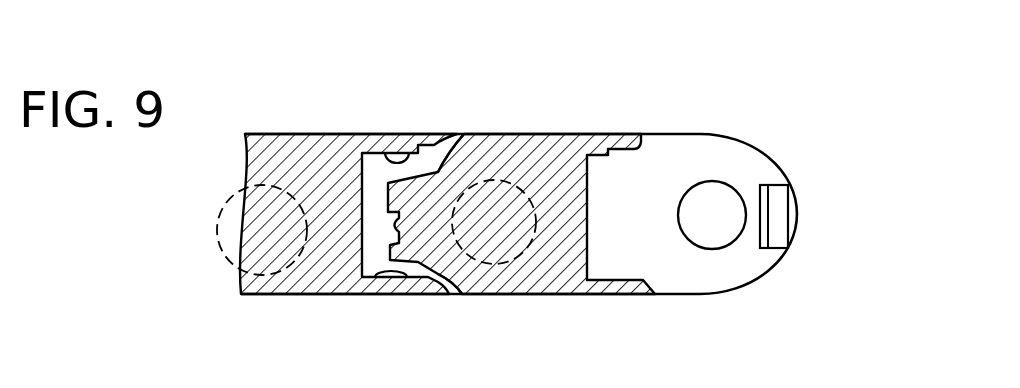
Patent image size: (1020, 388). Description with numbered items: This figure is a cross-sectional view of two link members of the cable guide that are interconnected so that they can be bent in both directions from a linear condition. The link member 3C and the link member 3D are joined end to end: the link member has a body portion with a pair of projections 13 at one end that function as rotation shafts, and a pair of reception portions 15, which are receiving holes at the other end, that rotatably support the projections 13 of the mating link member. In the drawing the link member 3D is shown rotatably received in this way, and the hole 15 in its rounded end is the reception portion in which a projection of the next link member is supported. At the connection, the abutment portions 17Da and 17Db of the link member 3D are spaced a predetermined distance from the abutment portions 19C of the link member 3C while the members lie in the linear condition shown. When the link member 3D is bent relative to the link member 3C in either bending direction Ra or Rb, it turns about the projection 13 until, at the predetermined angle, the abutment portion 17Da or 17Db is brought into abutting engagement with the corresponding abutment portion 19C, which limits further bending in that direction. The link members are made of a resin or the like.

The link member 3C is at (303, 133).
The link member 3D is at (695, 133).
The projection 13 is at (276, 282).
The reception portion 15 is at (716, 249).
The abutment portion 19C is at (410, 158).
The abutment portion 17Da is at (458, 134).
The abutment portion 17Db is at (447, 294).
The bending direction Rb is at (821, 166).
The bending direction Ra is at (832, 236).